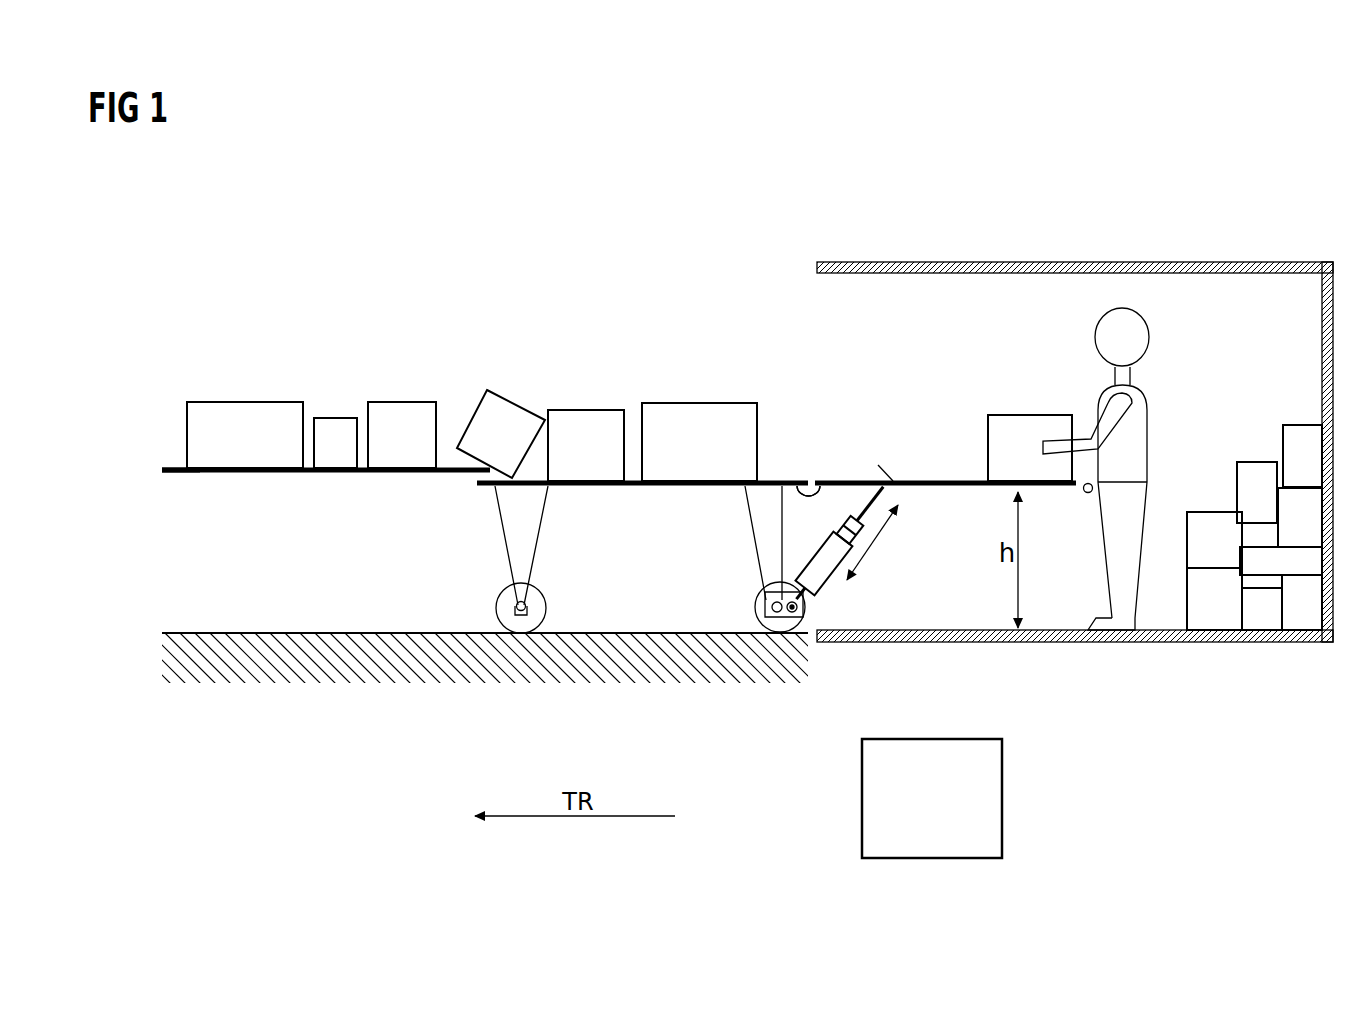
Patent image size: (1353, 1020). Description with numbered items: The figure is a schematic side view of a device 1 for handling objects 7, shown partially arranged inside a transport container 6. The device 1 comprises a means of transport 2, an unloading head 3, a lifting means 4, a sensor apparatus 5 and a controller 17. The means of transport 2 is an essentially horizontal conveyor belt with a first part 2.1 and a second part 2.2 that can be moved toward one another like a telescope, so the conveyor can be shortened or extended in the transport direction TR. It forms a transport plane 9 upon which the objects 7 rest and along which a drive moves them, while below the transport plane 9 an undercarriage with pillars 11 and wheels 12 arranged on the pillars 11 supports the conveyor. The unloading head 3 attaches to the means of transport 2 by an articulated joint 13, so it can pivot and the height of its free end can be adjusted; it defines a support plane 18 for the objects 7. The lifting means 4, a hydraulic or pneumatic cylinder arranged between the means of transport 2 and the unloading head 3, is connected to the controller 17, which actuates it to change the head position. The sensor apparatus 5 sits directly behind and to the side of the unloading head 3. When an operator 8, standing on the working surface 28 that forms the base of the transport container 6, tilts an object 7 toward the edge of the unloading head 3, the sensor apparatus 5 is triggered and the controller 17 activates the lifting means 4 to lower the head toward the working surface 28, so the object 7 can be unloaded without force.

The device 1 is at (392, 754).
The means of transport 2 is at (332, 331).
The first part 2.1 is at (270, 473).
The second part 2.2 is at (660, 487).
The unloading head 3 is at (950, 480).
The lifting means 4 is at (830, 585).
The sensor apparatus 5 is at (1088, 493).
The transport container 6 is at (1233, 262).
The objects 7 is at (697, 414).
The operator 8 is at (1135, 442).
The transport plane 9 is at (175, 467).
The pillars 11 is at (513, 533).
The wheels 12 is at (498, 607).
The articulated joint 13 is at (785, 479).
The controller 17 is at (1002, 800).
The support plane 18 is at (890, 478).
The working surface 28 is at (930, 630).